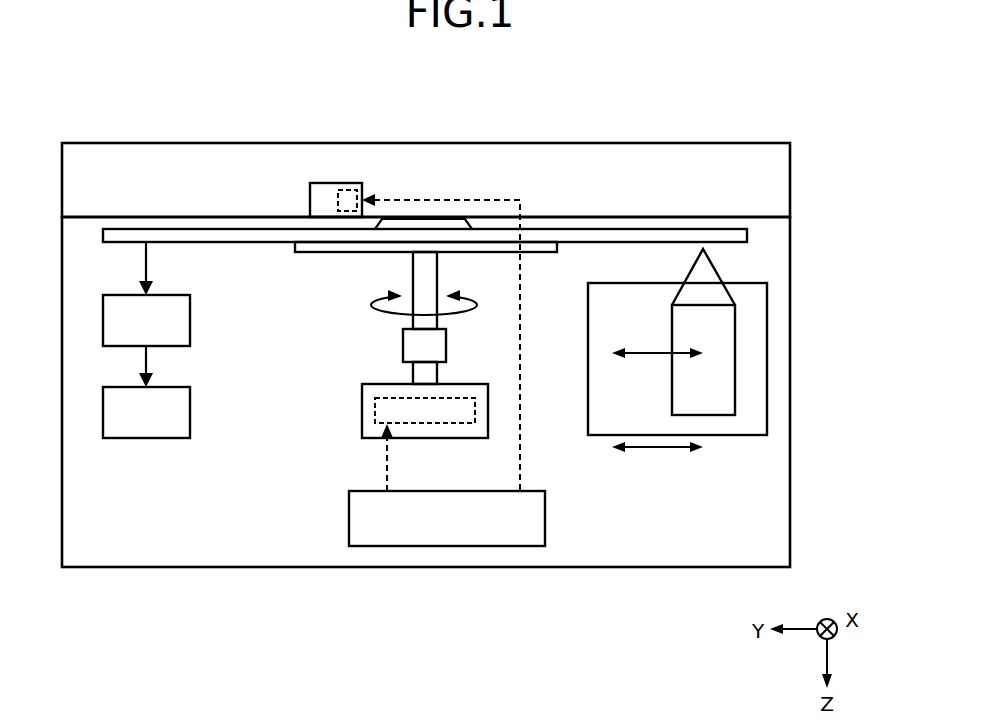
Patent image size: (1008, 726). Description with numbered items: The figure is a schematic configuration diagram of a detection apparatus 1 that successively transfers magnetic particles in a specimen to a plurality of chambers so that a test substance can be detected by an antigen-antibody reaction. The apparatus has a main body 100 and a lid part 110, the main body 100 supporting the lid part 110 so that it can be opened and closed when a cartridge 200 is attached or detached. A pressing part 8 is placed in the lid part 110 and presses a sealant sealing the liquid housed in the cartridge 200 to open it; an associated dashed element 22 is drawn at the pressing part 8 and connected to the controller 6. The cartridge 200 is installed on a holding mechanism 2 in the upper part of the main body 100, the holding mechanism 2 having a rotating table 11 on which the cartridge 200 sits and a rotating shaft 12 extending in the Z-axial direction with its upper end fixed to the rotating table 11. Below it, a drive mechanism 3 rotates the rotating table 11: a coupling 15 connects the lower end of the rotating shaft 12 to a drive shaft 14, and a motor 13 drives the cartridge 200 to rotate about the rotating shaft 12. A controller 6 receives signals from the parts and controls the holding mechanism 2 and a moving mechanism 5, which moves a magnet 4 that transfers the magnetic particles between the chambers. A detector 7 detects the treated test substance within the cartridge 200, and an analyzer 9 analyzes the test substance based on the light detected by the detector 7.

The detection apparatus 1 is at (737, 115).
The main body 100 is at (790, 467).
The lid part 110 is at (790, 167).
The cartridge 200 is at (220, 229).
The pressing part 8 is at (323, 196).
The camera 22 is at (347, 190).
The holding mechanism 2 is at (290, 262).
The rotating table 11 is at (365, 253).
The rotating shaft 12 is at (425, 272).
The coupling 15 is at (413, 347).
The drive shaft 14 is at (428, 373).
The drive mechanism 3 is at (432, 438).
The motor 13 is at (375, 412).
The controller 6 is at (349, 520).
The detector 7 is at (177, 333).
The analyzer 9 is at (147, 422).
The magnet 4 is at (722, 347).
The moving mechanism 5 is at (642, 417).